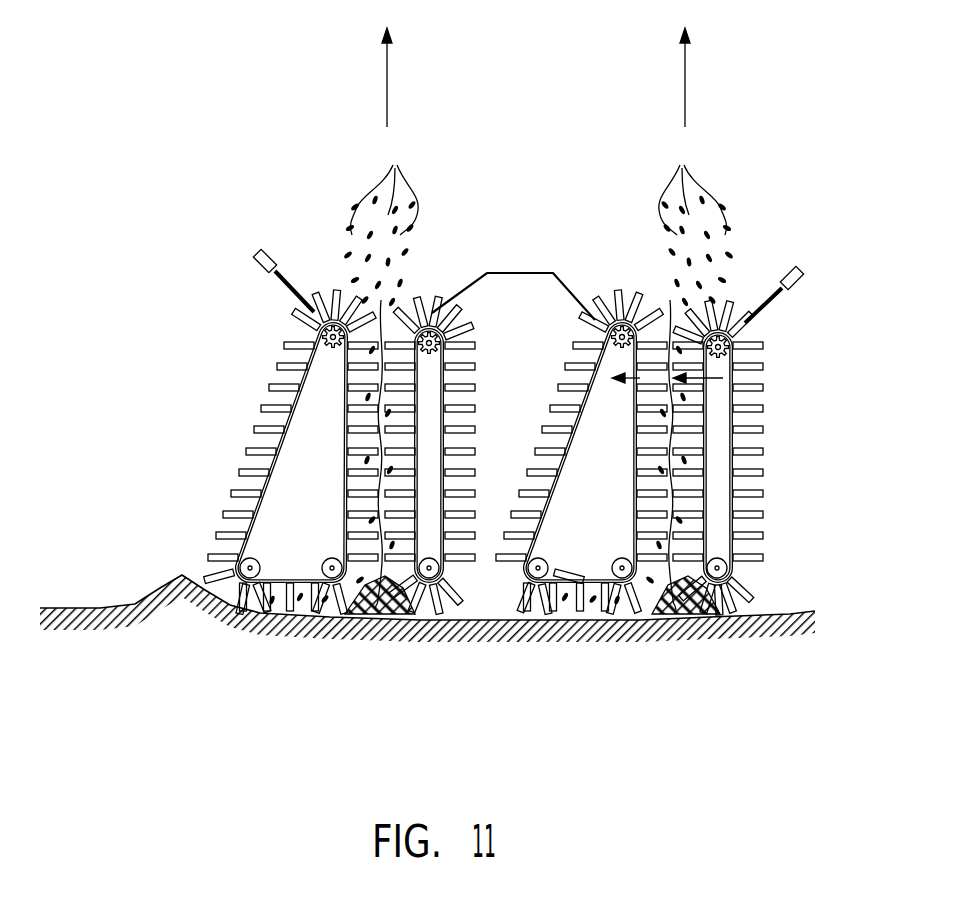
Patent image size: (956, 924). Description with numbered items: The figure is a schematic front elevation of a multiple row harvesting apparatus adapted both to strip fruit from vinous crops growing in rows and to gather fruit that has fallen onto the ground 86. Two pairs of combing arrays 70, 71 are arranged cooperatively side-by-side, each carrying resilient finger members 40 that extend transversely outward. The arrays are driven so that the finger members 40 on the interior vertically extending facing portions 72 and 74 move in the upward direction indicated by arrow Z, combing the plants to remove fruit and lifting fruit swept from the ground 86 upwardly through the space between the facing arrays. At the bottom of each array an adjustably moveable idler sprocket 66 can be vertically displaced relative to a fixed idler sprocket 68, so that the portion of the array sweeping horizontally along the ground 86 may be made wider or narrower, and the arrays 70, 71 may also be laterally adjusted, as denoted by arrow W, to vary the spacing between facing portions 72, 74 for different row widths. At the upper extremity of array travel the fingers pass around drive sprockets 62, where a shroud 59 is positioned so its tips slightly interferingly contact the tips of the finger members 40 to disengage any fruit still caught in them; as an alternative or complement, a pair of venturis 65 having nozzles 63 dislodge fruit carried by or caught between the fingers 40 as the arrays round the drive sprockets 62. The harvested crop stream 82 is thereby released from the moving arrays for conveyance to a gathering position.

The resilient finger member 40 is at (275, 358).
The shroud 59 is at (530, 273).
The drive sprocket 62 is at (420, 305).
The nozzle 63 is at (287, 296).
The venturi 65 is at (258, 254).
The adjustable idler sprocket 66 is at (251, 584).
The fixed idler sprocket 68 is at (333, 584).
The combing array 70 is at (430, 378).
The combing array 71 is at (305, 442).
The interior vertically extending facing portion 72 is at (429, 437).
The interior vertically extending facing portion 74 is at (333, 513).
The harvested crop stream 82 is at (500, 372).
The ground 86 is at (140, 603).
The width-wise adjustability arrow W is at (735, 400).
The upward direction arrow Z is at (544, 77).